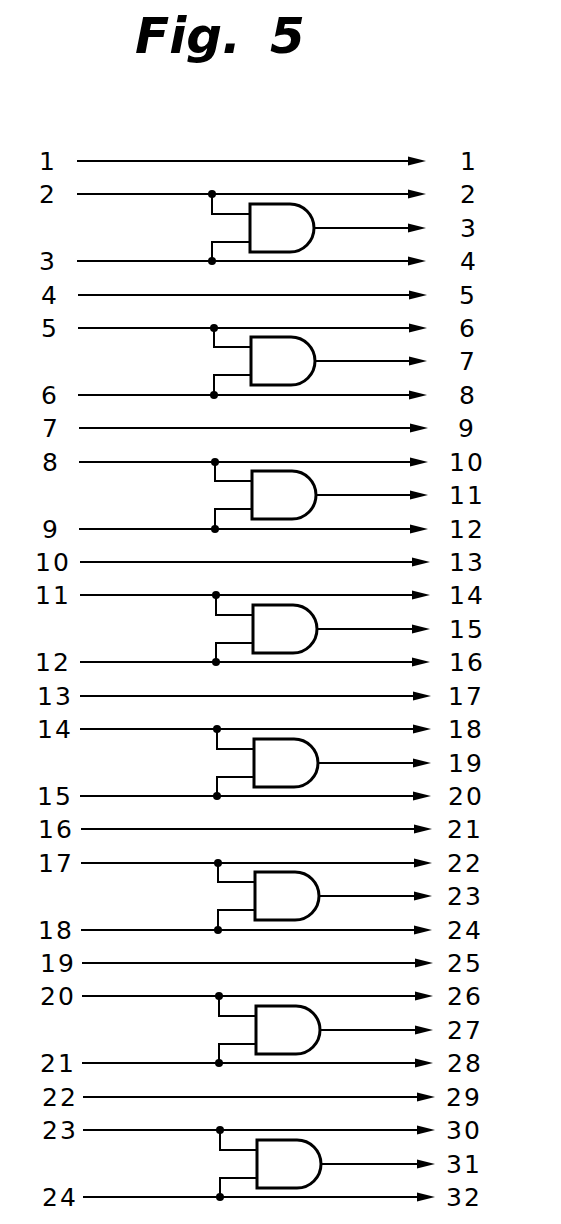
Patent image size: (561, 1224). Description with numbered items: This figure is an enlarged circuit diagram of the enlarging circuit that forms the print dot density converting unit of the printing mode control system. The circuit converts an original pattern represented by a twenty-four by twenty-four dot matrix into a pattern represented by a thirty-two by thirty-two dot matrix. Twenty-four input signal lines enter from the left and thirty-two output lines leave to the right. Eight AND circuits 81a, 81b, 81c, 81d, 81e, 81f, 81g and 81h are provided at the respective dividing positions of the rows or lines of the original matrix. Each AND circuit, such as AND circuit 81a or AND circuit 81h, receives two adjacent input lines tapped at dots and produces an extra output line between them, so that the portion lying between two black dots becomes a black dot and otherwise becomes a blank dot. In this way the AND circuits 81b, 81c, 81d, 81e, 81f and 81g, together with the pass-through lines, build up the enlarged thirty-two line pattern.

The AND circuit 81a is at (250, 228).
The AND circuit 81b is at (251, 361).
The AND circuit 81c is at (252, 495).
The AND circuit 81d is at (253, 629).
The AND circuit 81e is at (254, 763).
The AND circuit 81f is at (255, 896).
The AND circuit 81g is at (256, 1030).
The AND circuit 81h is at (257, 1164).